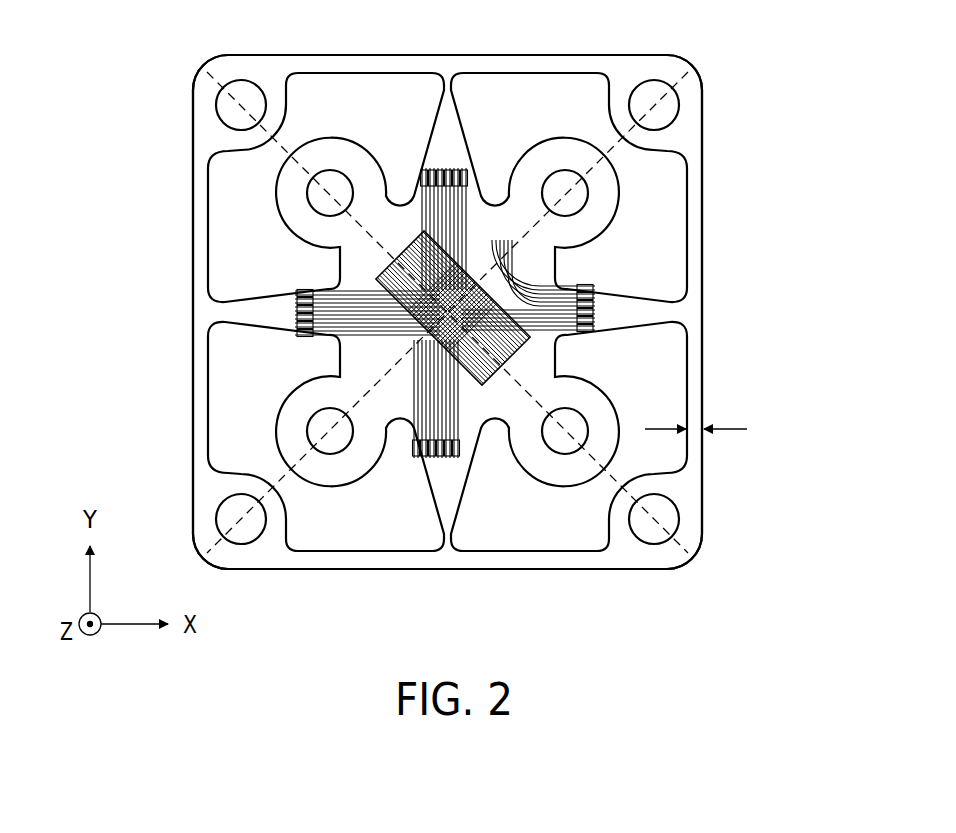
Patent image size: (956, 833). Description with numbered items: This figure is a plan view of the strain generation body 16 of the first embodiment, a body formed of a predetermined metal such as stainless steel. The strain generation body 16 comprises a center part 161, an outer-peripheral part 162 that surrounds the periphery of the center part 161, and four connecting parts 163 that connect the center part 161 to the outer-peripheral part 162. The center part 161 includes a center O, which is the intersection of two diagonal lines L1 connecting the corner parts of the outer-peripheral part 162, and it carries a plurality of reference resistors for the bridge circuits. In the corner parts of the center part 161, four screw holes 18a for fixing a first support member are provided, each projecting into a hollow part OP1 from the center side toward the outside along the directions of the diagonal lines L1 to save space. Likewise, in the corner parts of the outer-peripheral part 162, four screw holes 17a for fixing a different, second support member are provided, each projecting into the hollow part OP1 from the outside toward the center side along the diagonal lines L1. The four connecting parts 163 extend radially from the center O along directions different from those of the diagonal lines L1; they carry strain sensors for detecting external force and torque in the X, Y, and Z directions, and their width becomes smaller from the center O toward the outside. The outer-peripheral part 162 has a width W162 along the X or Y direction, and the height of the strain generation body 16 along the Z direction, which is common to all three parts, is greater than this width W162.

The strain generation body 16 is at (614, 588).
The center part 161 is at (470, 283).
The outer-peripheral part 162 is at (702, 373).
The connecting parts 163 is at (277, 313).
The width of the outer-peripheral part W162 is at (697, 430).
The hollow part OP1 is at (543, 100).
The screw holes 17a is at (242, 97).
The screw holes 18a is at (332, 186).
The diagonal lines L1 is at (618, 148).
The center O is at (358, 250).